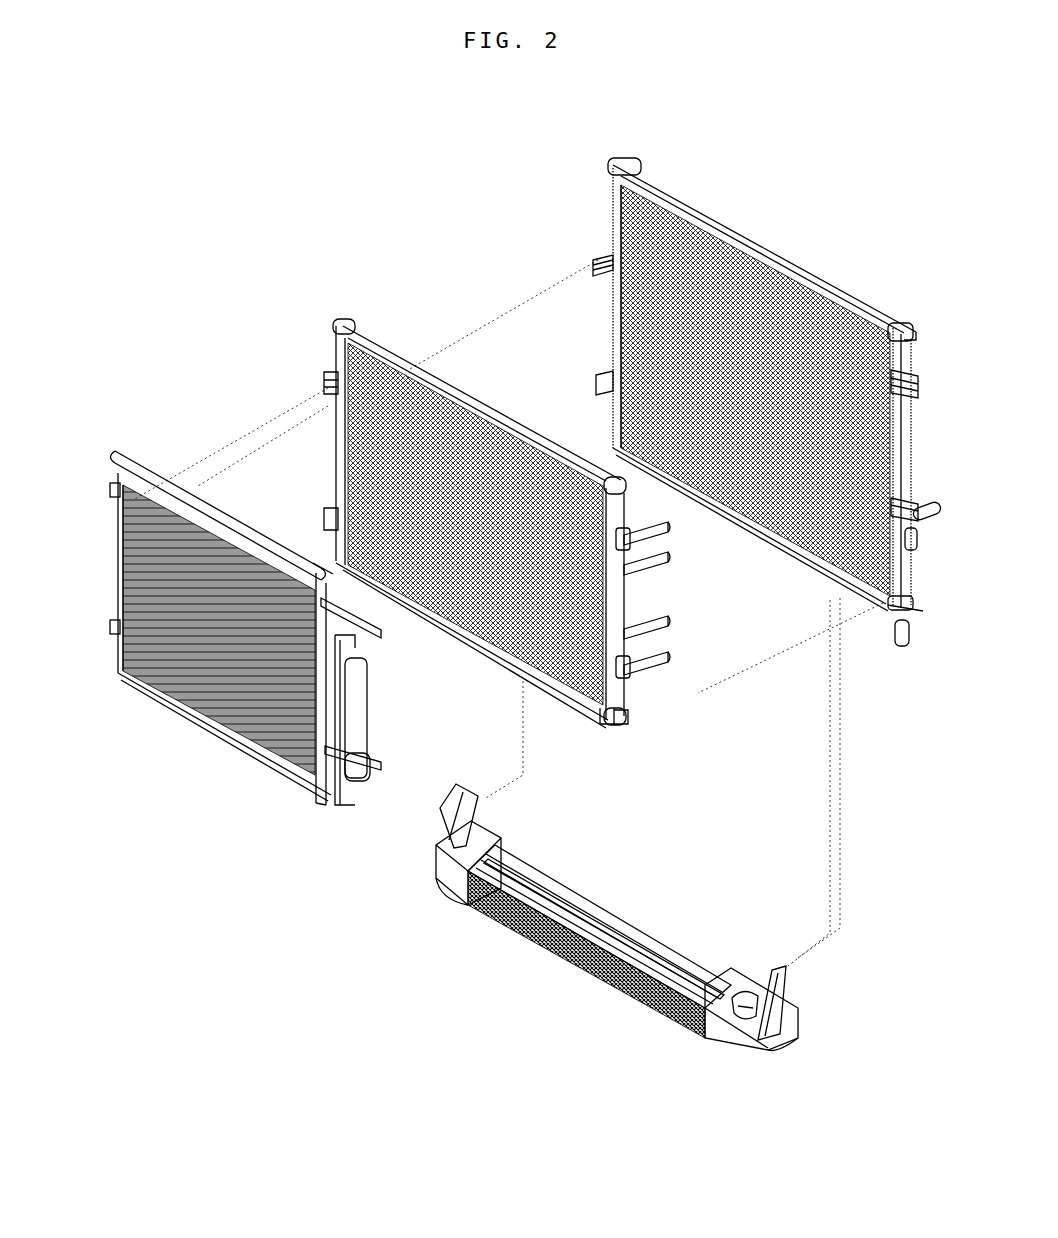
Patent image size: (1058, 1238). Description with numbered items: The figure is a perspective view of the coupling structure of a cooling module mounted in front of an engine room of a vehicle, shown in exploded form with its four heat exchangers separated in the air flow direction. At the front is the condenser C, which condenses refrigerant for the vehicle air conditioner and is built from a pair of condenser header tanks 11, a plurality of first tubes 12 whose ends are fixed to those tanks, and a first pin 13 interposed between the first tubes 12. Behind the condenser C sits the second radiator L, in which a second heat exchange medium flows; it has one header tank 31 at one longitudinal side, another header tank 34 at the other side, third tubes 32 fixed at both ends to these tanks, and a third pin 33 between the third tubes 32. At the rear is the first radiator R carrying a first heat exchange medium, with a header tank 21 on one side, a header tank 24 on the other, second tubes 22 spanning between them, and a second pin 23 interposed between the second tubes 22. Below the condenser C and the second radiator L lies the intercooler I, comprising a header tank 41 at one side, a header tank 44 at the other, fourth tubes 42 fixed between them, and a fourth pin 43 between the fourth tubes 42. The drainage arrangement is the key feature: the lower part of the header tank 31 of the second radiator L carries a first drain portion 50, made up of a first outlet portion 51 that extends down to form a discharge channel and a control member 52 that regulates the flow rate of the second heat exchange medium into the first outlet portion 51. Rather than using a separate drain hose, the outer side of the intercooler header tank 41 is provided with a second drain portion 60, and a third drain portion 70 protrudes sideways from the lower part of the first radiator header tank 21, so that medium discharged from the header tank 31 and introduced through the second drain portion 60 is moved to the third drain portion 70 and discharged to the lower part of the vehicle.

The first radiator R is at (597, 147).
The 1-1-th header tank 21 is at (905, 450).
The second tubes 22 is at (790, 258).
The second pin 23 is at (757, 238).
The 1-2-th header tank 24 is at (605, 190).
The third drain portion 70 is at (893, 632).
The second radiator L is at (322, 312).
The 2-1-th header tank 31 is at (638, 588).
The third tubes 32 is at (423, 357).
The third pin 33 is at (393, 352).
The 2-2-th header tank 34 is at (318, 375).
The first drain portion 50 is at (616, 770).
The first outlet portion 51 is at (608, 722).
The control member 52 is at (595, 722).
The condenser C is at (98, 438).
The condenser header tanks 11 is at (132, 460).
The first tubes 12 is at (113, 670).
The first pin 13 is at (135, 682).
The intercooler I is at (447, 940).
The 3-1-th header tank 41 is at (702, 1038).
The fourth tubes 42 is at (598, 977).
The fourth pin 43 is at (557, 947).
The 3-2-th header tank 44 is at (432, 887).
The second drain portion 60 is at (732, 1040).